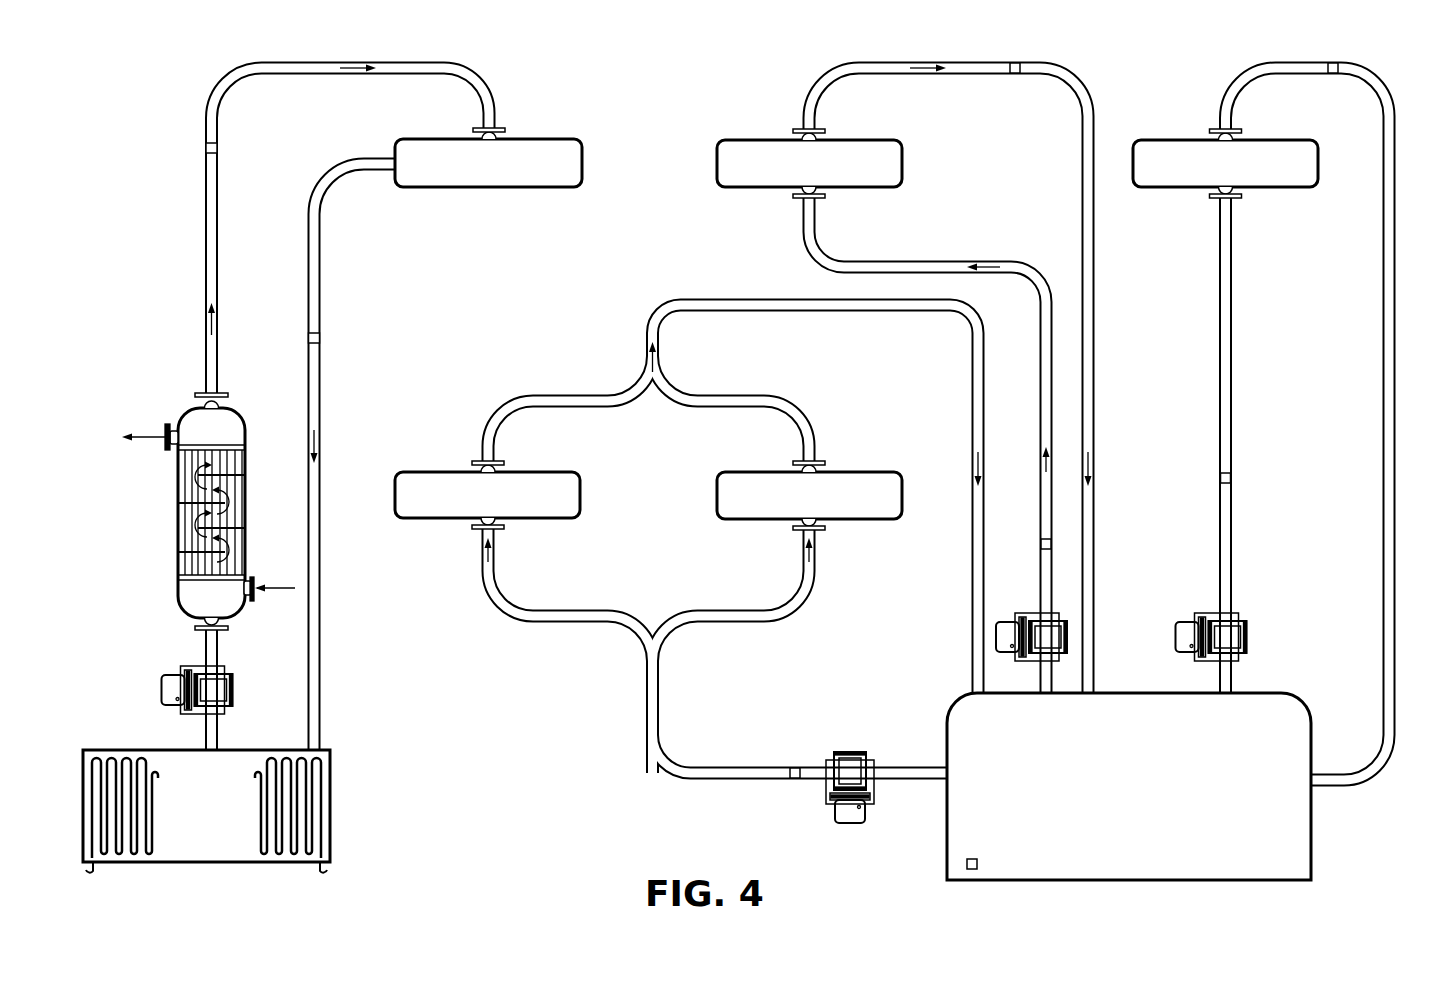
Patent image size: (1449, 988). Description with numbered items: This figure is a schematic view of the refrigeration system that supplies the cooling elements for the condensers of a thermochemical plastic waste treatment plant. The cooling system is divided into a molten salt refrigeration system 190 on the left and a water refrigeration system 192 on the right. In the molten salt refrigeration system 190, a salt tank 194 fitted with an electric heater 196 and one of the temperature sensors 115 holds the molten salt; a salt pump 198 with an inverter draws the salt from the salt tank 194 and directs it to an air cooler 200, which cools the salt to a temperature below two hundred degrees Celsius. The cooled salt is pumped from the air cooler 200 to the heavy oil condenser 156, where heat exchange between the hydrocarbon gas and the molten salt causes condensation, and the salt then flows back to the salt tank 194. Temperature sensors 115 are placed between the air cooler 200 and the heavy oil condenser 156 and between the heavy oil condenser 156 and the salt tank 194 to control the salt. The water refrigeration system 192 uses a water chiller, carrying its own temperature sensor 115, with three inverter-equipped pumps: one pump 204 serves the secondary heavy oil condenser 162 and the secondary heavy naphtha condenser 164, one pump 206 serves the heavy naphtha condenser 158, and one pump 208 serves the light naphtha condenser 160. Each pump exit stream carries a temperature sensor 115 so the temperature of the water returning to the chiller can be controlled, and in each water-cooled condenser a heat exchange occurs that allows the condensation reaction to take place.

The temperature sensor 115 is at (206, 149).
The heavy oil condenser 156 is at (471, 176).
The heavy naphtha condenser 158 is at (792, 176).
The light naphtha condenser 160 is at (1208, 176).
The secondary heavy oil condenser 162 is at (470, 507).
The secondary heavy naphtha condenser 164 is at (792, 507).
The molten salt refrigeration system 190 is at (104, 333).
The water refrigeration system 192 is at (1405, 77).
The salt tank 194 is at (189, 817).
The electric heater 196 is at (330, 864).
The salt pump 198 is at (176, 672).
The air cooler 200 is at (238, 410).
The pump 204 is at (858, 755).
The pump 206 is at (1008, 620).
The pump 208 is at (1192, 620).